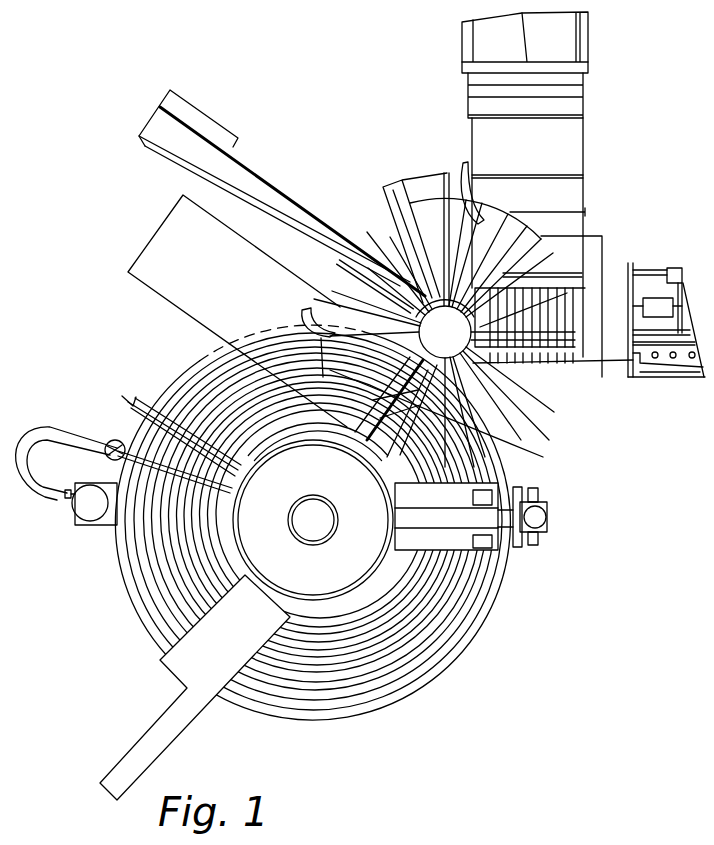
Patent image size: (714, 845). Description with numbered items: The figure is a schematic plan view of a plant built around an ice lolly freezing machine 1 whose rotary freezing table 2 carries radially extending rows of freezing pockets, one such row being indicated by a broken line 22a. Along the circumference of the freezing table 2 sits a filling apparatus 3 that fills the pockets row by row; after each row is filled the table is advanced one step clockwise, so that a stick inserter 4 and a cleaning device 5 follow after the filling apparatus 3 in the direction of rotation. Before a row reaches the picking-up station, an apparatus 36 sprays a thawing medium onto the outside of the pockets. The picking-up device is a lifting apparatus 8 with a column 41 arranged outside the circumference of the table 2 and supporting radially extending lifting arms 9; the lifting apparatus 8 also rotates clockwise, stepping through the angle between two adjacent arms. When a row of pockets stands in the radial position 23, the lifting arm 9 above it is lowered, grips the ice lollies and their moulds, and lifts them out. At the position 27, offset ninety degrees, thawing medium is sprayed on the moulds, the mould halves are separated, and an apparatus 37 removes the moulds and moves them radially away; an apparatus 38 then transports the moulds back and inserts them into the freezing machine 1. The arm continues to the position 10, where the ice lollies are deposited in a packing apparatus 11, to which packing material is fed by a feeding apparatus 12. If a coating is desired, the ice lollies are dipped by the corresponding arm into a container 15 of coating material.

The ice lolly freezing machine 1 is at (374, 713).
The rotary freezing table 2 is at (288, 706).
The filling apparatus 3 is at (531, 537).
The stick inserter 4 is at (176, 668).
The cleaning device 5 is at (50, 500).
The lifting apparatus 8 is at (507, 214).
The lifting arm 9 is at (463, 180).
The position 10 is at (560, 332).
The packing apparatus 11 is at (575, 108).
The feeding apparatus 12 is at (657, 374).
The container 15 is at (407, 158).
The broken line 22a is at (420, 653).
The position 23 is at (449, 421).
The position 27 is at (346, 262).
The apparatus 36 is at (350, 432).
The apparatus 37 is at (272, 180).
The apparatus 38 is at (160, 298).
The column 41 is at (549, 440).